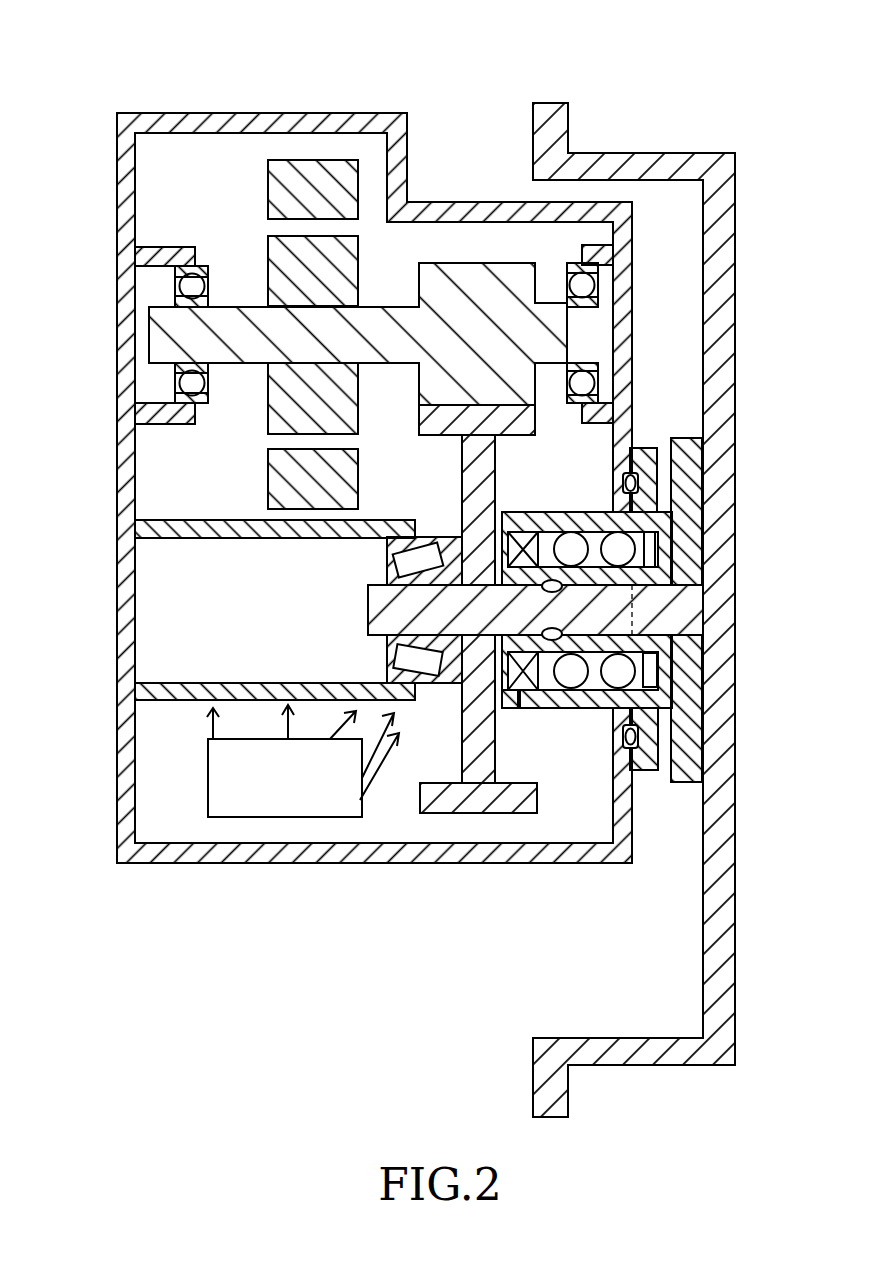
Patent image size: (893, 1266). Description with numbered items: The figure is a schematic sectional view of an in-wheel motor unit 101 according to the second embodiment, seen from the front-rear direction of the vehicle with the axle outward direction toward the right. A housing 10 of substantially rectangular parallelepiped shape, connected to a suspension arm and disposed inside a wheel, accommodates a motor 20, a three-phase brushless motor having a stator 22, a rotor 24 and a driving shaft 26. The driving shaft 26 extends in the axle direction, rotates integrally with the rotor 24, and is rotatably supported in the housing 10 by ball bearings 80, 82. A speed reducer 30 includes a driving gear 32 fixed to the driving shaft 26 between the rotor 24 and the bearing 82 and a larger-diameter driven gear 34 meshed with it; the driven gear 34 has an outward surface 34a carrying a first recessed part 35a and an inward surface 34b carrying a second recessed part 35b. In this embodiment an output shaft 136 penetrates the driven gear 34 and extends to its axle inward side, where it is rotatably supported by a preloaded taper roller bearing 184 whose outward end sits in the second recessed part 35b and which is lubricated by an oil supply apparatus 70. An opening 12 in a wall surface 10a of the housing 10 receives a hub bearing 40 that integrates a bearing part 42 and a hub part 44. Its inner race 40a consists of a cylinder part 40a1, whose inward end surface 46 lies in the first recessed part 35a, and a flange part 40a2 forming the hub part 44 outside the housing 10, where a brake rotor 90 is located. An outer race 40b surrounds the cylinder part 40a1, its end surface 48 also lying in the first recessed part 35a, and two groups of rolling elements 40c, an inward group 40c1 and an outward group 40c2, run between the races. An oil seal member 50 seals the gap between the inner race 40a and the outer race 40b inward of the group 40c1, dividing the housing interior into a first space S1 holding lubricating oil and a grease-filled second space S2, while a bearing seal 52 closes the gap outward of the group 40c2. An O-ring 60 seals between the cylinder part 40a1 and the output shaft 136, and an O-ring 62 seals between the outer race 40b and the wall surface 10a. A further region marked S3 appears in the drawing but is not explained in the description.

The in-wheel motor unit 101 is at (200, 72).
The housing 10 is at (116, 138).
The wall surface 10a is at (630, 286).
The motor 20 is at (425, 53).
The stator 22 is at (320, 175).
The rotor 24 is at (368, 240).
The driving shaft 26 is at (403, 300).
The speed reducer 30 is at (458, 240).
The driving gear 32 is at (500, 275).
The driven gear 34 is at (442, 492).
The surface 34a is at (538, 422).
The surface 34b is at (419, 418).
The first recessed part 35a is at (507, 438).
The second recessed part 35b is at (461, 440).
The ball bearing 80 is at (165, 262).
The ball bearing 82 is at (600, 254).
The brake rotor 90 is at (726, 256).
The O-ring 62 is at (640, 470).
The opening 12 is at (622, 518).
The oil seal member 50 is at (521, 530).
The O-ring 60 is at (553, 579).
The space S2 is at (650, 522).
The third space S3 is at (658, 548).
The bearing seal 52 is at (664, 560).
The output shaft 136 is at (407, 603).
The taper roller bearing 184 is at (396, 668).
The end surface 46 is at (490, 650).
The end surface 48 is at (503, 693).
The hub bearing 40 is at (570, 927).
The inner race 40a is at (803, 655).
The cylinder part 40a1 is at (692, 655).
The flange part 40a2 is at (692, 717).
The outer race 40b is at (523, 710).
The rolling elements 40c is at (513, 773).
The rolling elements 40c1 is at (567, 680).
The rolling elements 40c2 is at (618, 674).
The bearing part 42 is at (563, 815).
The hub part 44 is at (686, 787).
The oil supply apparatus 70 is at (263, 805).
The space S1 is at (183, 487).